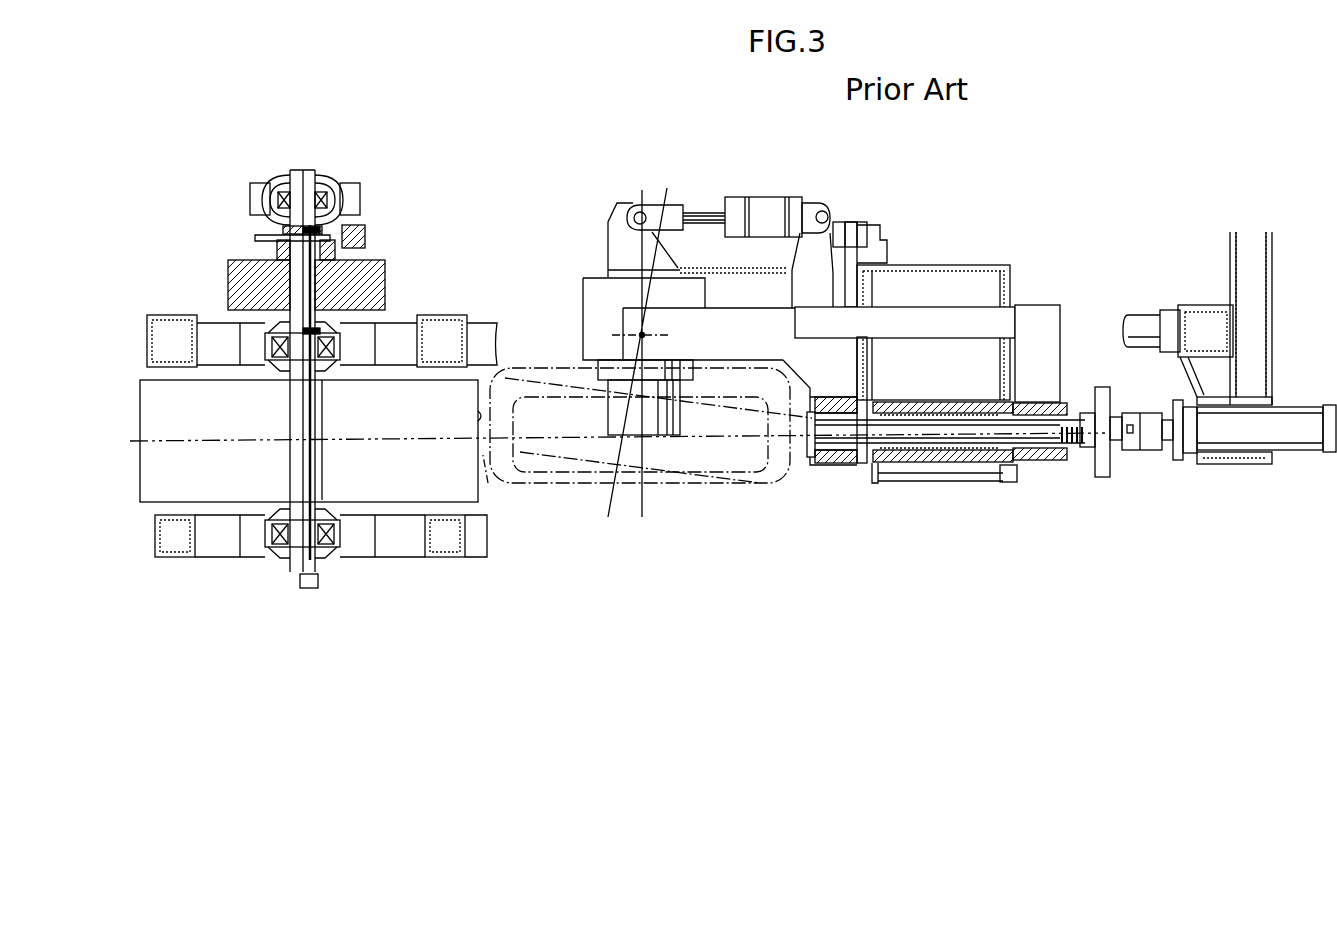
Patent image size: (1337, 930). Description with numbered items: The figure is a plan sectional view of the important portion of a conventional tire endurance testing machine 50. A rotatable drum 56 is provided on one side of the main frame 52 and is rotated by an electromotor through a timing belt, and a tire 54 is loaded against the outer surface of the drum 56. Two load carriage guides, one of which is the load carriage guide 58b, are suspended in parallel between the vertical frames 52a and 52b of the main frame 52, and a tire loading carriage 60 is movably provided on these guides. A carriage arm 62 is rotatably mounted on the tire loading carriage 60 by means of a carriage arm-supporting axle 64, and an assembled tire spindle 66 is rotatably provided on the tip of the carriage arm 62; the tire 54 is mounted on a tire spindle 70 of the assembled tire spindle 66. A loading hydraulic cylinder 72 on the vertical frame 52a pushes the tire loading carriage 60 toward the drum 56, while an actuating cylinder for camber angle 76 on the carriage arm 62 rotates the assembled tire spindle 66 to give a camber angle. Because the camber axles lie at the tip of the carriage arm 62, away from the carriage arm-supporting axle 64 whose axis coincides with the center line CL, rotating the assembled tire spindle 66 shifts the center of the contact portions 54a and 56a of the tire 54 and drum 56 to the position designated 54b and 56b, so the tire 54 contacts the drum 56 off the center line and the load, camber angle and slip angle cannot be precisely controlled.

The conventional tire endurance testing machine 50 is at (708, 140).
The main frame 52 is at (477, 568).
The vertical frame 52a is at (1198, 305).
The vertical frame 52b is at (443, 315).
The tire 54 is at (715, 483).
The contact portion 54a is at (508, 477).
The shifted contact position 54b is at (490, 382).
The drum 56 is at (375, 490).
The contact portion 56a is at (488, 483).
The spindle mounting 56b is at (478, 416).
The load carriage guide 58b is at (1141, 322).
The tire loading carriage 60 is at (940, 268).
The carriage arm 62 is at (812, 335).
The carriage arm-supporting axle 64 is at (963, 428).
The assembled tire spindle 66 is at (578, 277).
The tire spindle 70 is at (665, 425).
The loading hydraulic cylinder 72 is at (1297, 413).
The actuating cylinder for camber angle 76 is at (768, 208).